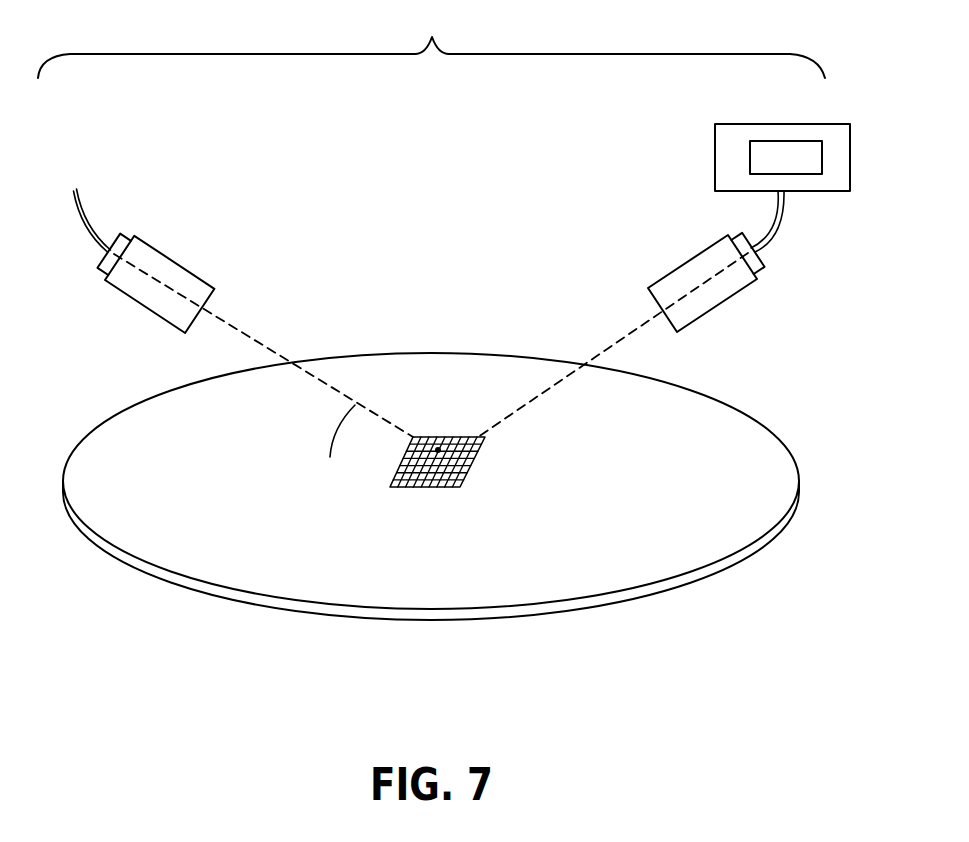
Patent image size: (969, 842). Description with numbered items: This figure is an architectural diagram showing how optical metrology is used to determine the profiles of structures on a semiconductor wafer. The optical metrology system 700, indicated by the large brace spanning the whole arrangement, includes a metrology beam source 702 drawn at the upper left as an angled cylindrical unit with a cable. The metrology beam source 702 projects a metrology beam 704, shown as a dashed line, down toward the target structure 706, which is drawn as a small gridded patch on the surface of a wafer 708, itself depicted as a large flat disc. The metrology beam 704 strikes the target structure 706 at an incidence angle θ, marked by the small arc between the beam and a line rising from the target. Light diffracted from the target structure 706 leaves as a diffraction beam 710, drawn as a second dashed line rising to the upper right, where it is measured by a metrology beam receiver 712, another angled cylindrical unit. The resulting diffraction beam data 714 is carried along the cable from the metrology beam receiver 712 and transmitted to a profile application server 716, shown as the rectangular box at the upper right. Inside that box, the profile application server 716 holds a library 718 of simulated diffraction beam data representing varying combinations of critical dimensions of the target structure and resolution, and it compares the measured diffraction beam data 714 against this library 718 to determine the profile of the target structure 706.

The optical metrology system 700 is at (431, 44).
The metrology beam source 702 is at (188, 268).
The metrology beam 704 is at (278, 357).
The target structure 706 is at (407, 486).
The wafer 708 is at (105, 423).
The diffraction beam 710 is at (548, 387).
The metrology beam receiver 712 is at (712, 310).
The diffraction beam data 714 is at (776, 224).
The profile application server 716 is at (793, 142).
The library 718 is at (803, 169).